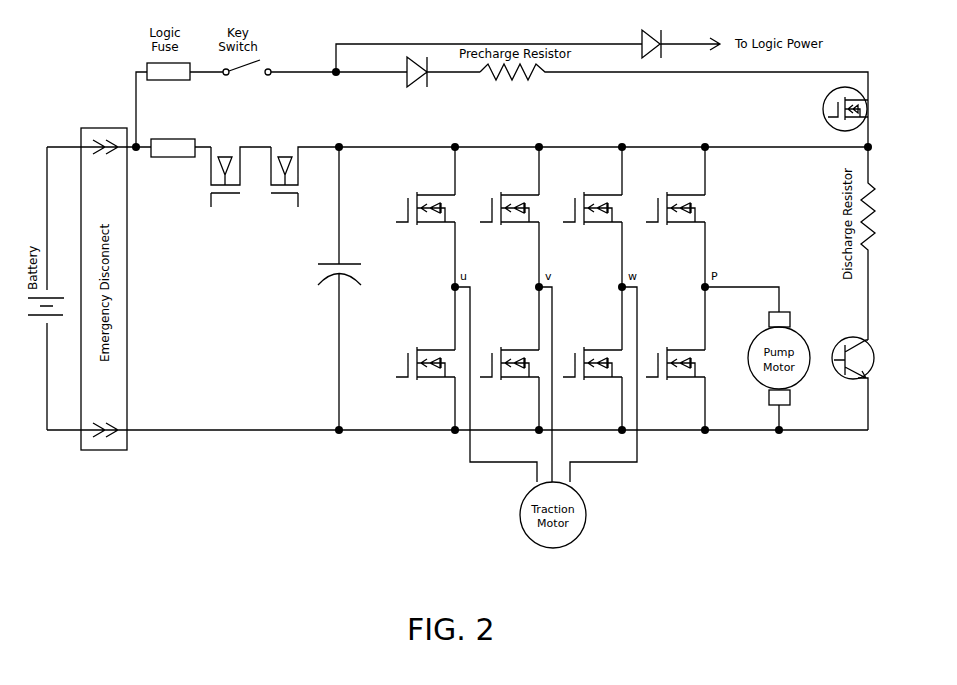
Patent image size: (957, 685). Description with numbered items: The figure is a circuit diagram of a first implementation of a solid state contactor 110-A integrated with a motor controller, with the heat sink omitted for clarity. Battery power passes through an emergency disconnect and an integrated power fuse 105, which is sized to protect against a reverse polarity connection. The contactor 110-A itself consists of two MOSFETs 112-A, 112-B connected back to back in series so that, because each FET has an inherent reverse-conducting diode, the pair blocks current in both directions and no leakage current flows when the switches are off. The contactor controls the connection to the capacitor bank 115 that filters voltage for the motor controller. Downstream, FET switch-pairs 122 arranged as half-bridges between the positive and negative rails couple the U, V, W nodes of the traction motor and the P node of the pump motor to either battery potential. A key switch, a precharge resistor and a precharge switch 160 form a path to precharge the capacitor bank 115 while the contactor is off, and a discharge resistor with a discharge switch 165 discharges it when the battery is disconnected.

The power fuse 105 is at (193, 163).
The solid state contactor 110-A is at (269, 189).
The FET 112-A is at (225, 205).
The FET 112-B is at (285, 205).
The capacitor bank 115 is at (330, 300).
The switch-pairs 122 is at (712, 346).
The precharge switch 160 is at (822, 110).
The discharge switch 165 is at (840, 330).